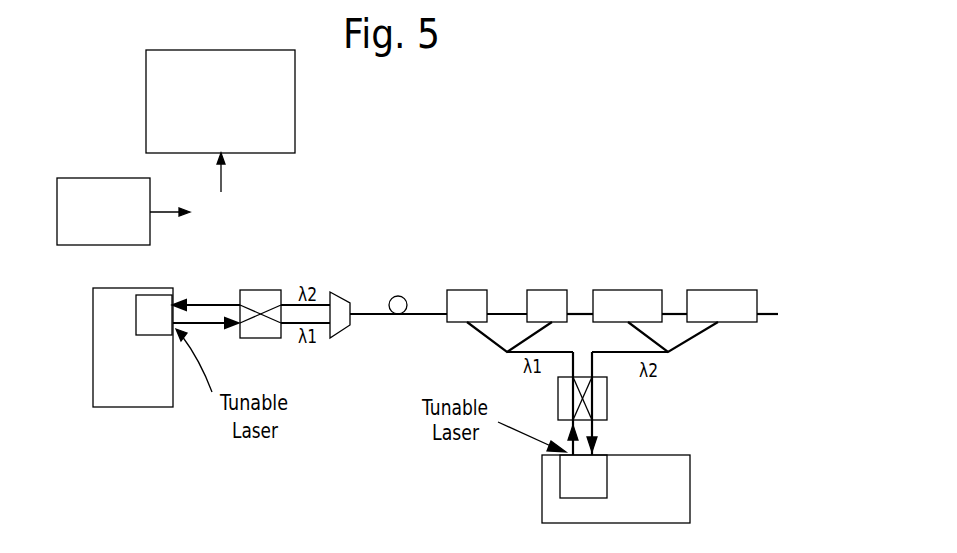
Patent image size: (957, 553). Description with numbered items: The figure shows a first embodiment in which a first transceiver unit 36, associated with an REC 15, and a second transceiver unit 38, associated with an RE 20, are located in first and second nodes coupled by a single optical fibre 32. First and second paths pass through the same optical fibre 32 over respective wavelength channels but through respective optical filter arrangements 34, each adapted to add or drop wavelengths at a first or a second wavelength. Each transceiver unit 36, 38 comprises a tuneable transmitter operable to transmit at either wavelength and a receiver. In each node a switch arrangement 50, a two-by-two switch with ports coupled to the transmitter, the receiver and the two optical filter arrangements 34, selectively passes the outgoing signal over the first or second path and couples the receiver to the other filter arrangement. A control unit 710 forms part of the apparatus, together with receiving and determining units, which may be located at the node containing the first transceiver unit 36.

The REC 15 is at (145, 407).
The RE 20 is at (668, 503).
The optical fibre 32 is at (397, 296).
The optical filter arrangement 34 is at (567, 280).
The first transceiver unit 36 is at (147, 313).
The second transceiver unit 38 is at (570, 477).
The switch arrangement 50 is at (258, 290).
The control unit 710 is at (92, 178).